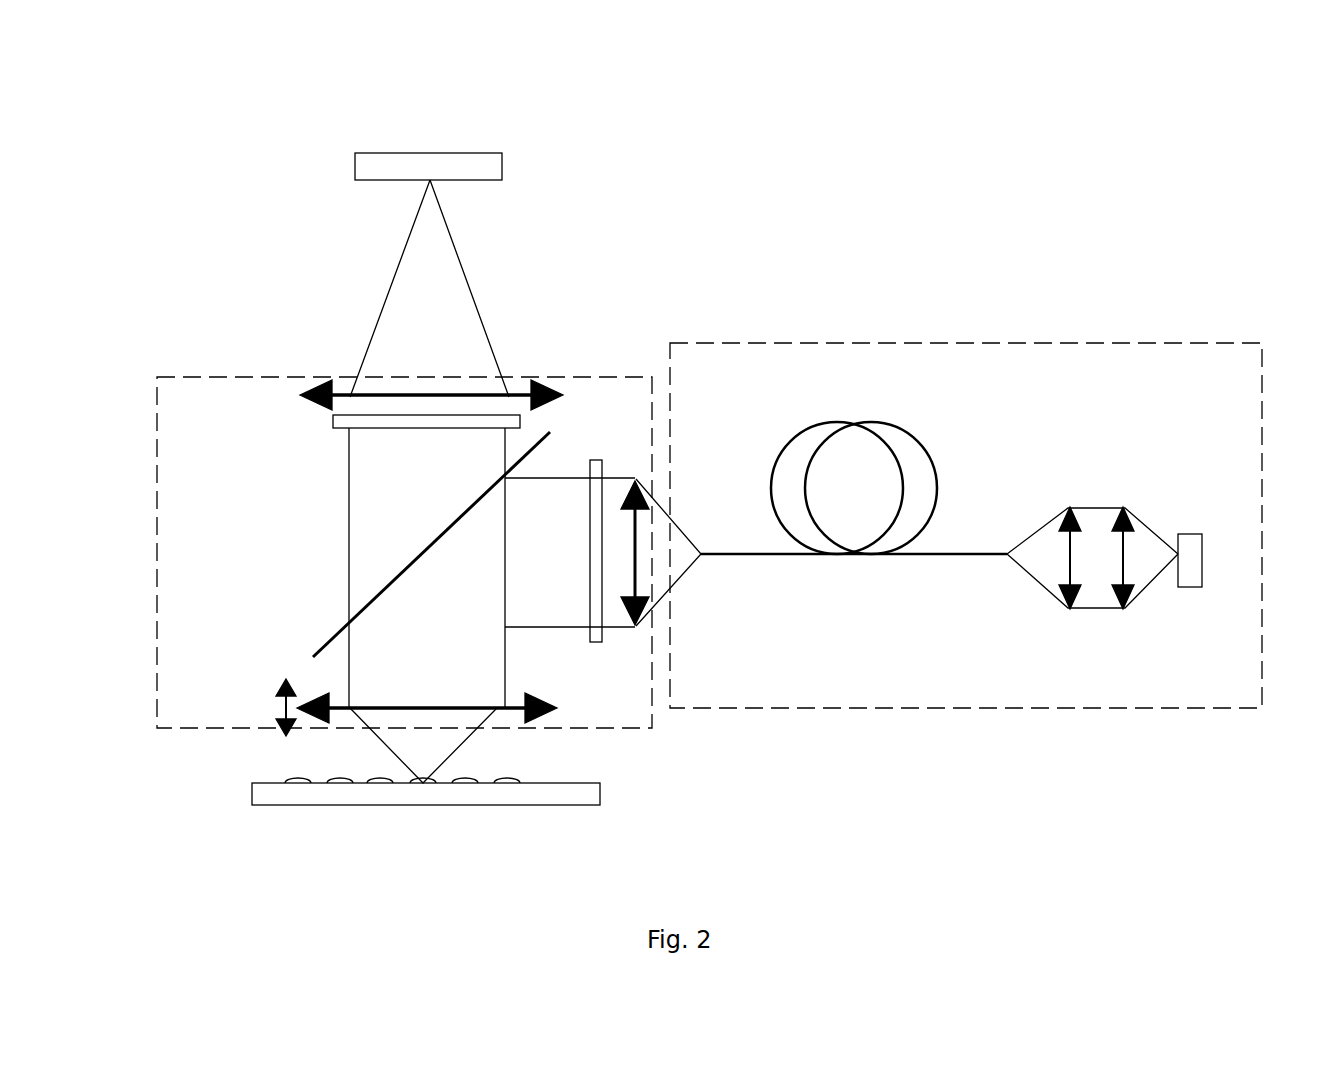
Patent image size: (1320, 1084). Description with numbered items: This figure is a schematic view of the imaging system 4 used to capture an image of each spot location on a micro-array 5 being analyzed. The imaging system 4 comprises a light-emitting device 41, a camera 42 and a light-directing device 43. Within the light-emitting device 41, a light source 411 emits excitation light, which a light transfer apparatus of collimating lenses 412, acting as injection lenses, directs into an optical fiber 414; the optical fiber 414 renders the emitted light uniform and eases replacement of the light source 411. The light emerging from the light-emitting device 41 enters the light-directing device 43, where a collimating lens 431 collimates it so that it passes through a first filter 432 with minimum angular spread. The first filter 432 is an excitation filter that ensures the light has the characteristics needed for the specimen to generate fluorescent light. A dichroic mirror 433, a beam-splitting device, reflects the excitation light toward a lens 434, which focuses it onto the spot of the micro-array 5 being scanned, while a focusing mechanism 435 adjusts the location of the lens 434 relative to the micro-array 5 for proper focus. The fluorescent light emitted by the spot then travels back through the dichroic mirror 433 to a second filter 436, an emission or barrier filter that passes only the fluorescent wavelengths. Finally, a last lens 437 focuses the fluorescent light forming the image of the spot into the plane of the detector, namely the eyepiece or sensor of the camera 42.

The imaging system 4 is at (684, 205).
The light-emitting device 41 is at (885, 342).
The light source 411 is at (1192, 587).
The collimating lenses 412 is at (1116, 476).
The optical fiber 414 is at (921, 421).
The camera 42 is at (428, 152).
The light-directing device 43 is at (157, 505).
The collimating lens 431 is at (661, 470).
The first filter 432 is at (601, 432).
The dichroic mirror 433 is at (325, 618).
The lens 434 is at (584, 731).
The focusing mechanism 435 is at (262, 702).
The second filter 436 is at (318, 410).
The last lens 437 is at (525, 378).
The micro-array 5 is at (455, 805).